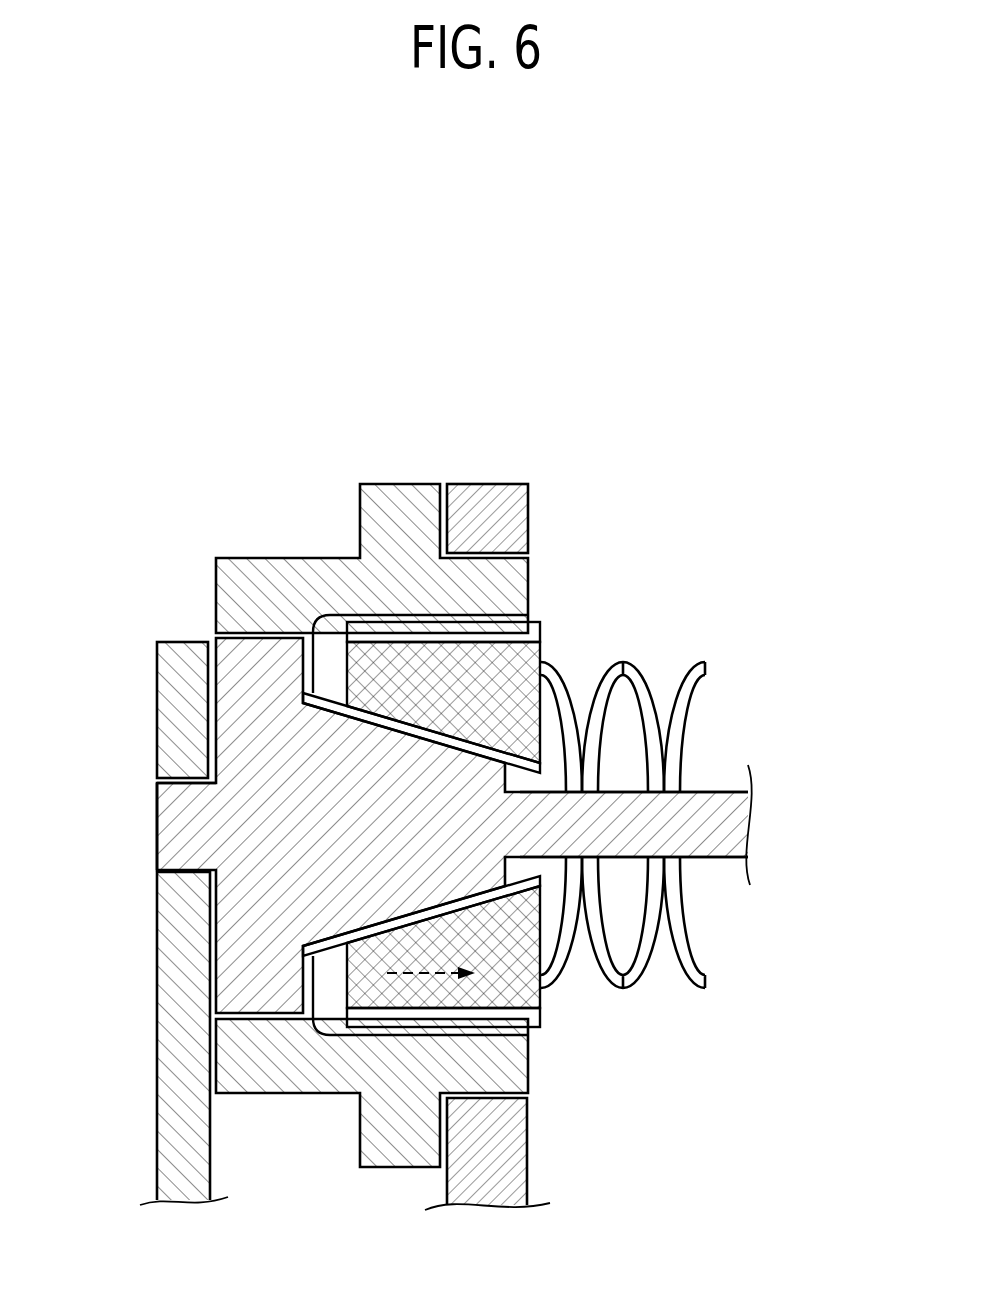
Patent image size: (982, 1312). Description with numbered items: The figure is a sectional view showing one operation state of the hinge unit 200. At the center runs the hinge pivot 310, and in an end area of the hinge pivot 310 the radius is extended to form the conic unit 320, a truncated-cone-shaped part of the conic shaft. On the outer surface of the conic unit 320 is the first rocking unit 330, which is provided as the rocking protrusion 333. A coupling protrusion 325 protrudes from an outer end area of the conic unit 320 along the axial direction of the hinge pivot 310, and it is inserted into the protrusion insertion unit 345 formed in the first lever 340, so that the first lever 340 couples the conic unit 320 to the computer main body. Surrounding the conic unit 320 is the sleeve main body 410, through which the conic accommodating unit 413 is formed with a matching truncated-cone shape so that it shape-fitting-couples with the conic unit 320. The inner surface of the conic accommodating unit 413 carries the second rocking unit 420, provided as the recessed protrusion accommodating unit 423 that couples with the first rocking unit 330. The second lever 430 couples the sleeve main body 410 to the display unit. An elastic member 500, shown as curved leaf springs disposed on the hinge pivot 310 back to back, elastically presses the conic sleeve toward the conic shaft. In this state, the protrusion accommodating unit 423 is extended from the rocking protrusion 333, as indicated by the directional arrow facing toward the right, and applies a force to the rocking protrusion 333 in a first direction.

The hinge unit 200 is at (714, 382).
The hinge pivot 310 is at (740, 821).
The conic unit 320 is at (352, 875).
The coupling protrusion 325 is at (157, 827).
The first rocking unit 330 is at (387, 754).
The rocking protrusion 333 is at (332, 706).
The first lever 340 is at (157, 658).
The protrusion insertion unit 345 is at (183, 786).
The sleeve main body 410 is at (493, 663).
The conic accommodating unit 413 is at (468, 766).
The second rocking unit 420 is at (511, 776).
The protrusion accommodating unit 423 is at (374, 733).
The second lever 430 is at (516, 490).
The elastic member 500 is at (545, 978).